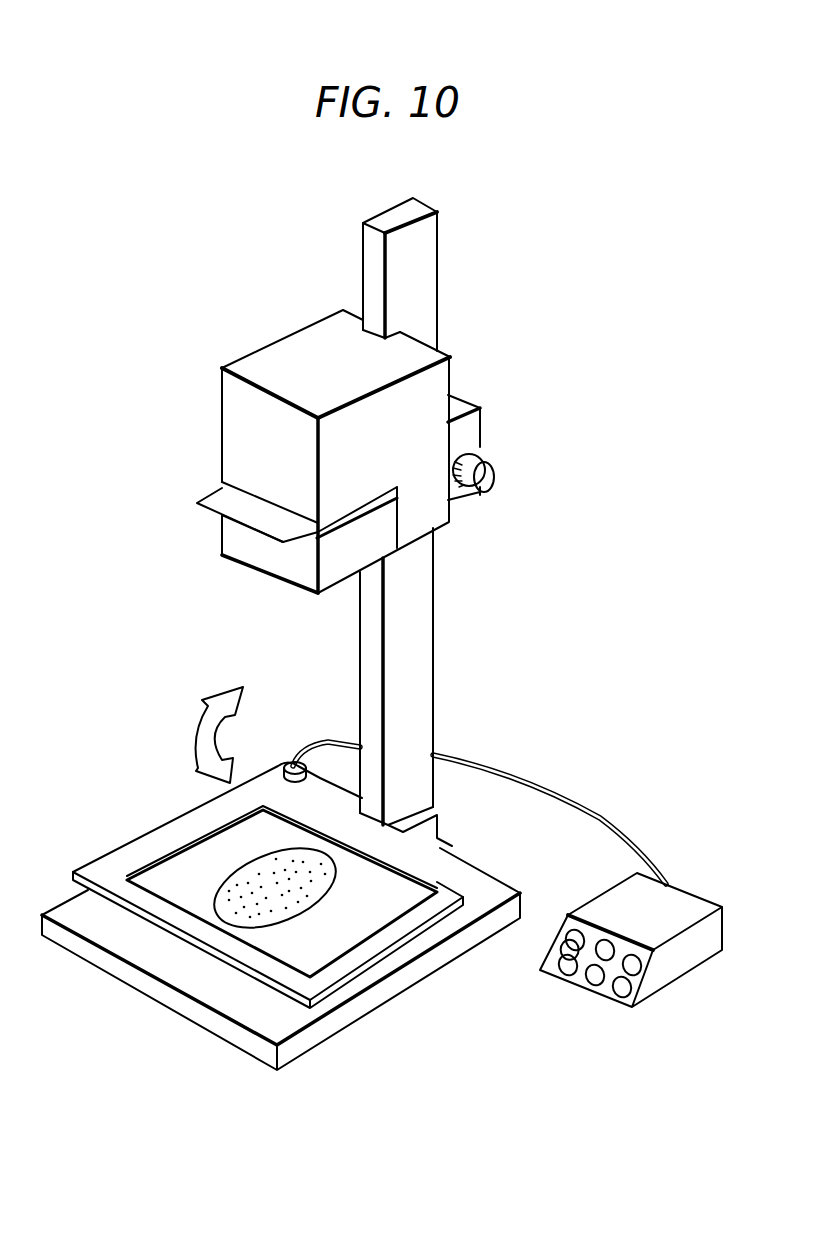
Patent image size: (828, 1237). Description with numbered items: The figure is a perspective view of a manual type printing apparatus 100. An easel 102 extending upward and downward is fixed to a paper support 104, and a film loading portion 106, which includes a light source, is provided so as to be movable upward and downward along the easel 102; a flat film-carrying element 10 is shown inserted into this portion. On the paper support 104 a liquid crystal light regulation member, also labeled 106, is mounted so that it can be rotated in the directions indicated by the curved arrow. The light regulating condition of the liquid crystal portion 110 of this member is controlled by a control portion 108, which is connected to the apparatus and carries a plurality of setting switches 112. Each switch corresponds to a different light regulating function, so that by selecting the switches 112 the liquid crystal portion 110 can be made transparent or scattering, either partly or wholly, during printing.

The sample plate / slide 10 is at (213, 507).
The printing apparatus 100 is at (590, 344).
The easel 102 is at (418, 650).
The paper support 104 is at (442, 957).
The film loading portion / liquid crystal light regulation member 106 is at (228, 440).
The control portion 108 is at (626, 964).
The liquid crystal portion 110 is at (332, 935).
The setting switches 112 is at (592, 982).